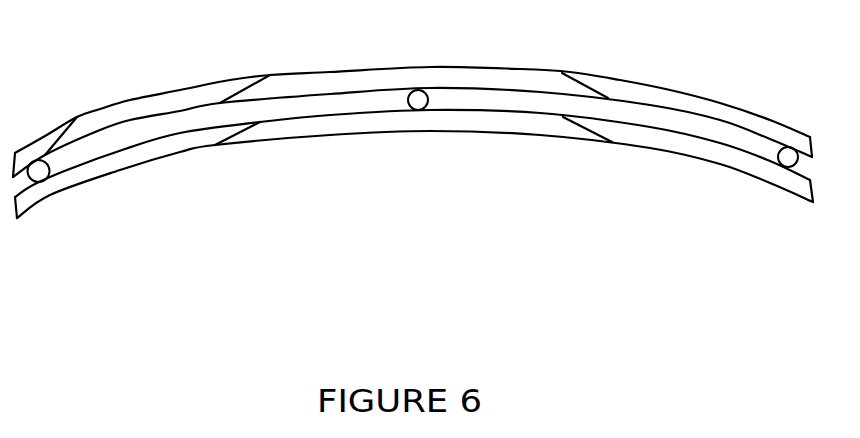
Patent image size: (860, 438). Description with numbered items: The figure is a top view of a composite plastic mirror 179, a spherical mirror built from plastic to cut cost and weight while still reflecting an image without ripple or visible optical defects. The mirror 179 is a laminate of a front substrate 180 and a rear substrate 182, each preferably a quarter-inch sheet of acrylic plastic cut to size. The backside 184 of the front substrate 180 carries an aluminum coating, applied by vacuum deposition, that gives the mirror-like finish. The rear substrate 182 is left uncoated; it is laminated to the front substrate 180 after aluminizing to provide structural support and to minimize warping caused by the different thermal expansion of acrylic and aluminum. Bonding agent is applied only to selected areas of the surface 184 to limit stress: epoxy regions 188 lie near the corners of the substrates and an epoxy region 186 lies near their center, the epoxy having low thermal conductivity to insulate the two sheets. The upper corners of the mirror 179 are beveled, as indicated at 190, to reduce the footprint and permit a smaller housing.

The composite plastic mirror 179 is at (415, 163).
The front substrate 180 is at (430, 133).
The rear substrate 182 is at (298, 72).
The backside 184 is at (370, 113).
The epoxy region 186 is at (427, 94).
The epoxy regions 188 is at (47, 157).
The beveled upper corners 190 is at (133, 163).